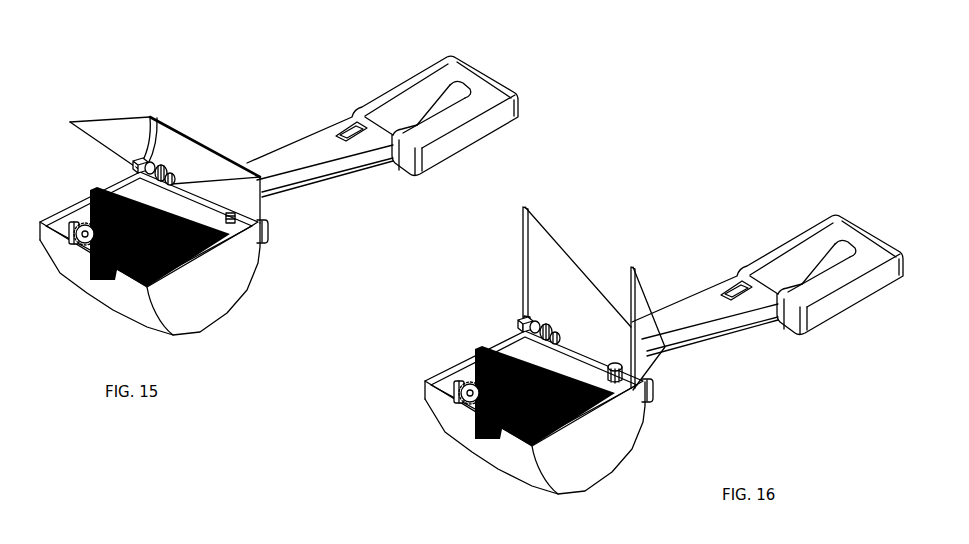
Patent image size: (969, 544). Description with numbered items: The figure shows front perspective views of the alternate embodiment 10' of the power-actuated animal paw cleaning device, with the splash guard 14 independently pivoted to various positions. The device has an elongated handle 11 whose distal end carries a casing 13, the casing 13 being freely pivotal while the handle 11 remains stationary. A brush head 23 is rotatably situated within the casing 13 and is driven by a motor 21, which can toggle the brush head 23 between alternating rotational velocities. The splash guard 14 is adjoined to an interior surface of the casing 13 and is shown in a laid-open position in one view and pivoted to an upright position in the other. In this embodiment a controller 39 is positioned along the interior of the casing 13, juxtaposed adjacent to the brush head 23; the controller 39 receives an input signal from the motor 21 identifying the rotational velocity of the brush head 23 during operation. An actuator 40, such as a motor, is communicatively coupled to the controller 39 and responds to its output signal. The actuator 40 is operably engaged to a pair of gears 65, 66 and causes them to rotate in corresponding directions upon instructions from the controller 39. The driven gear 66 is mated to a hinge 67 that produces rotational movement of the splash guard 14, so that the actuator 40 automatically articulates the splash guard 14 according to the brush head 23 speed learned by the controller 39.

In FIG. 15, the alternate embodiment 10' is at (280, 190).
In FIG. 16, the alternate embodiment 10' is at (670, 360).
In FIG. 15, the elongated handle 11 is at (343, 164).
In FIG. 16, the elongated handle 11 is at (690, 310).
In FIG. 15, the casing 13 is at (233, 275).
In FIG. 16, the casing 13 is at (617, 456).
In FIG. 15, the splash guard 14 is at (113, 122).
In FIG. 16, the splash guard 14 is at (657, 352).
In FIG. 15, the motor 21 is at (73, 233).
In FIG. 16, the motor 21 is at (466, 388).
In FIG. 16, the brush head 23 is at (467, 420).
In FIG. 15, the controller 39 is at (137, 167).
In FIG. 16, the controller 39 is at (527, 326).
In FIG. 15, the actuator 40 is at (147, 168).
In FIG. 16, the actuator 40 is at (523, 328).
In FIG. 15, the gear 65 is at (150, 168).
In FIG. 16, the gear 65 is at (540, 326).
In FIG. 15, the driven gear 66 is at (158, 170).
In FIG. 16, the driven gear 66 is at (546, 330).
In FIG. 15, the hinge 67 is at (167, 178).
In FIG. 16, the hinge 67 is at (553, 336).